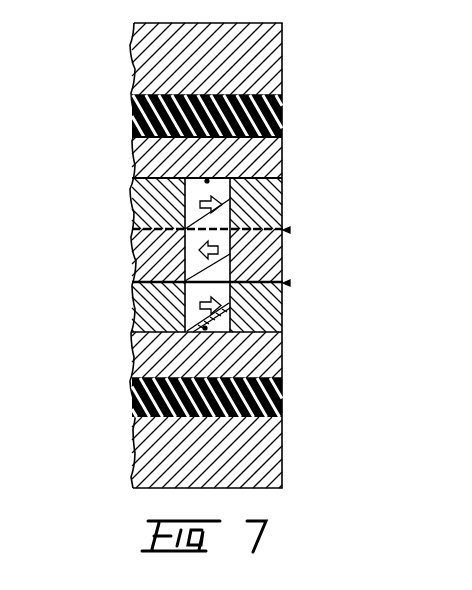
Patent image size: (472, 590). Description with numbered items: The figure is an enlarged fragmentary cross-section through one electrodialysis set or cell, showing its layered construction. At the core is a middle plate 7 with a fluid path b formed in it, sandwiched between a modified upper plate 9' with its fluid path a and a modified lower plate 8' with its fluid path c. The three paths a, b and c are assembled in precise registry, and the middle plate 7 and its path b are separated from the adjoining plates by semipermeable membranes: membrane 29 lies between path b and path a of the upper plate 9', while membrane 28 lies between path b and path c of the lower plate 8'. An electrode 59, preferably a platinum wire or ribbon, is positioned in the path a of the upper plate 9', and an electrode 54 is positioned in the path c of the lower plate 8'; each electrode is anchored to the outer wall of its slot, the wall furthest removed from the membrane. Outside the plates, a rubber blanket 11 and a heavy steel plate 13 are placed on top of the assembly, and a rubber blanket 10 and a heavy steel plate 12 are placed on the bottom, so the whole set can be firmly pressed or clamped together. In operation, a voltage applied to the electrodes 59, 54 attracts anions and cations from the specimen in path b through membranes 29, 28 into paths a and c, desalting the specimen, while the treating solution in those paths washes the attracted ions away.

The heavy steel plate 13 is at (283, 62).
The rubber blanket 11 is at (283, 117).
The upper plate 9' is at (233, 164).
The middle plate 7 is at (283, 258).
The semipermeable membrane 29 is at (283, 230).
The semipermeable membrane 28 is at (283, 283).
The lower plate 8' is at (233, 355).
The rubber blanket 10 is at (282, 398).
The heavy steel plate 12 is at (282, 453).
The electrode 59 is at (205, 182).
The electrode 54 is at (203, 328).
The fluid path a is at (193, 205).
The fluid path b is at (193, 250).
The fluid path c is at (193, 305).